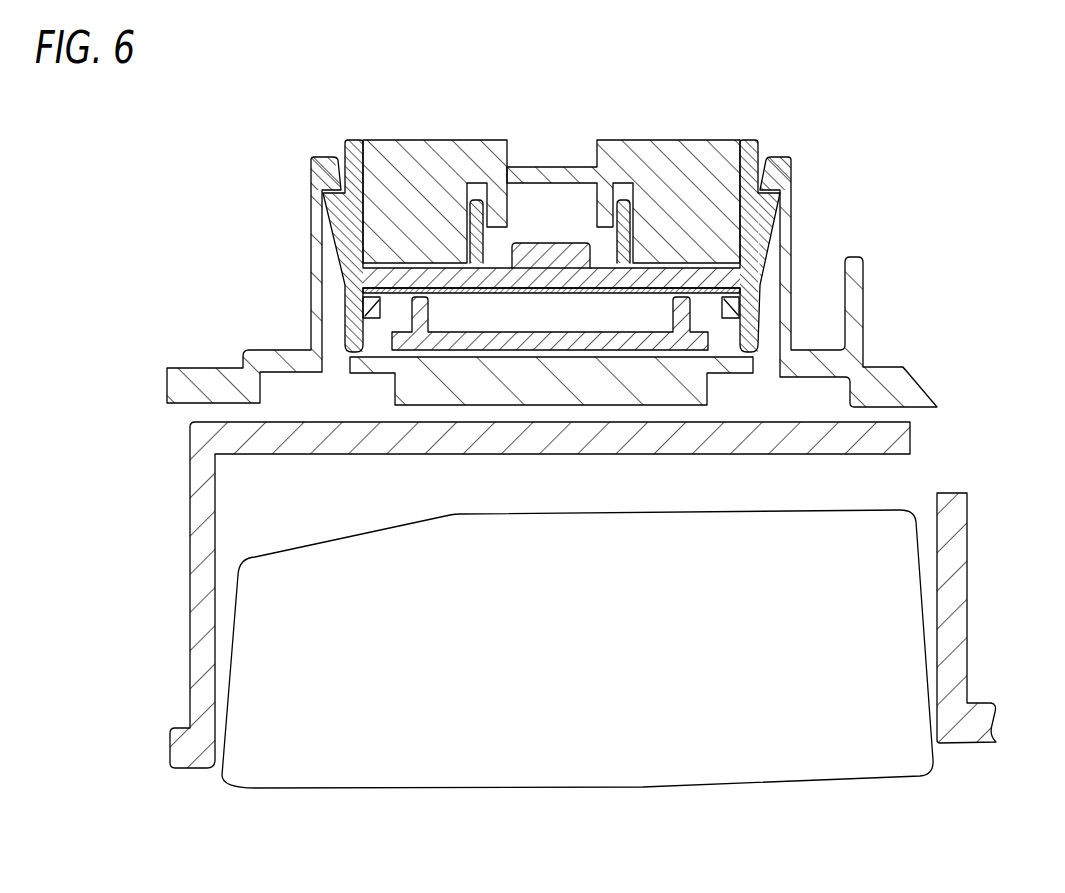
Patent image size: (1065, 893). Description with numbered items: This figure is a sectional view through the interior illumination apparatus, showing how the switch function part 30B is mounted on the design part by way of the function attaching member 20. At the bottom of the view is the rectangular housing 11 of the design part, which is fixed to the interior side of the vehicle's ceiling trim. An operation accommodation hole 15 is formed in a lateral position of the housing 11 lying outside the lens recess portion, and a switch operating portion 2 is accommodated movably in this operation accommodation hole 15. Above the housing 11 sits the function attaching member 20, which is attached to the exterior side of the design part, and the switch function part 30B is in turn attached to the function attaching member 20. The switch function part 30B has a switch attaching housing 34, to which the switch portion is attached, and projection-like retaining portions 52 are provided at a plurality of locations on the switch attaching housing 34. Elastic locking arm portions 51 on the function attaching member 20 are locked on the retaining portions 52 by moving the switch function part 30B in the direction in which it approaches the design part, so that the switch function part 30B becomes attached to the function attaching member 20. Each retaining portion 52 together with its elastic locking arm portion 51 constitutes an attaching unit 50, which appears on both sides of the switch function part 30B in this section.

The switch operating portion 2 is at (637, 770).
The housing 11 is at (967, 563).
The operation accommodation hole 15 is at (216, 696).
The function attaching member 20 is at (900, 387).
The switch function part 30B is at (673, 138).
The switch attaching housing 34 is at (430, 157).
The attaching unit 50 is at (554, 217).
The elastic locking arm portion 51 is at (325, 172).
The retaining portion 52 is at (327, 198).